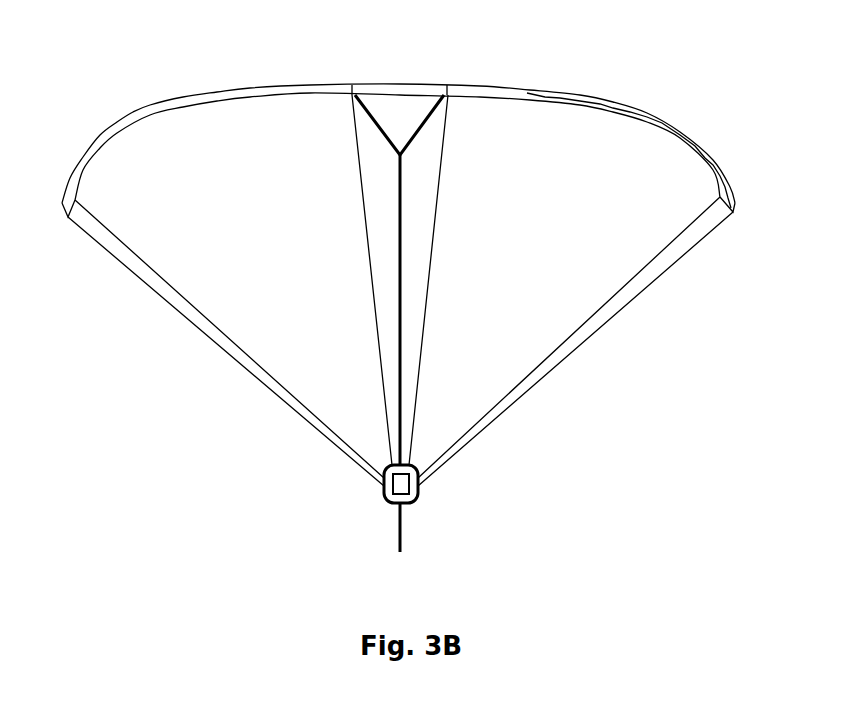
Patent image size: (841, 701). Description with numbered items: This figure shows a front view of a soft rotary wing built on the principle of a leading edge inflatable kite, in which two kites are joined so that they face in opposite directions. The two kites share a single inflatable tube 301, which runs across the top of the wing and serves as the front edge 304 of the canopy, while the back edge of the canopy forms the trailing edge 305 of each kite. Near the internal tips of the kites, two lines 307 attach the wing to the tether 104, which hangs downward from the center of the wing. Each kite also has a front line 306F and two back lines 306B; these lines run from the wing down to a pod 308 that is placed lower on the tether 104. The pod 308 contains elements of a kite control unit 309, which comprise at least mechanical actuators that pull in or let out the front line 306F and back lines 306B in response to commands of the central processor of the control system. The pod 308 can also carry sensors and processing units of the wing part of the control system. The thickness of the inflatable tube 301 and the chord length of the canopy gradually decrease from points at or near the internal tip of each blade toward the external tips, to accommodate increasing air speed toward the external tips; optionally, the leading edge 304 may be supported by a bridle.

The tether 104 is at (402, 536).
The inflatable tube 301 is at (400, 85).
The front edge 304 is at (163, 105).
The trailing edge 305 is at (596, 93).
The back lines 306B is at (377, 355).
The front line 306F is at (215, 342).
The lines 307 is at (377, 124).
The pod 308 is at (388, 493).
The kite control unit 309 is at (414, 490).